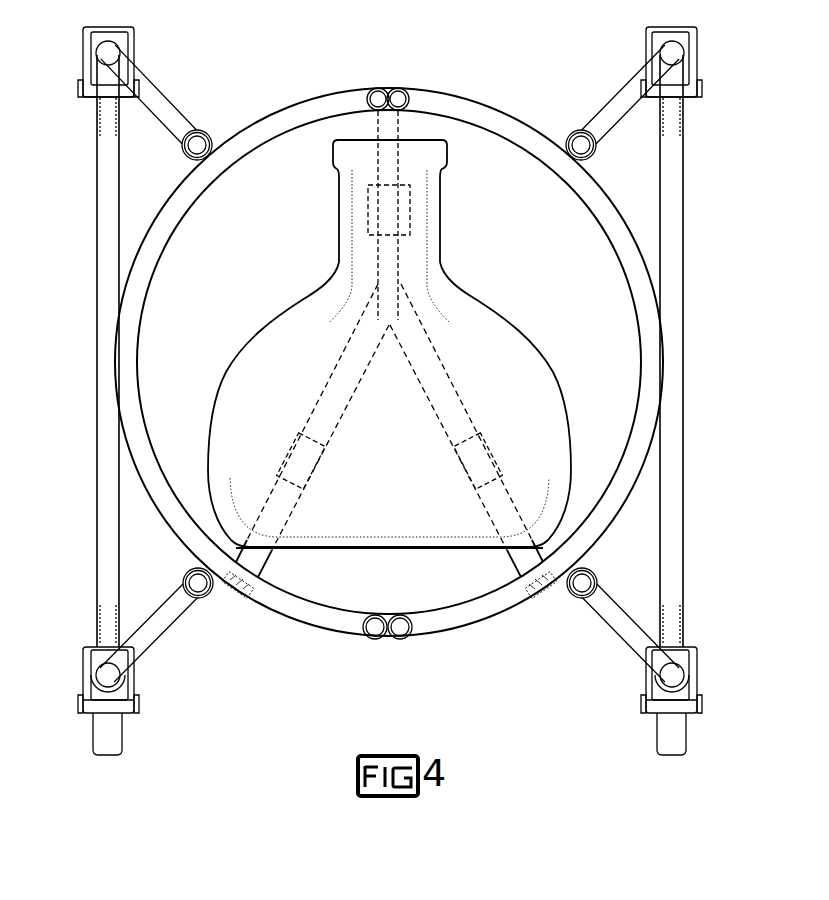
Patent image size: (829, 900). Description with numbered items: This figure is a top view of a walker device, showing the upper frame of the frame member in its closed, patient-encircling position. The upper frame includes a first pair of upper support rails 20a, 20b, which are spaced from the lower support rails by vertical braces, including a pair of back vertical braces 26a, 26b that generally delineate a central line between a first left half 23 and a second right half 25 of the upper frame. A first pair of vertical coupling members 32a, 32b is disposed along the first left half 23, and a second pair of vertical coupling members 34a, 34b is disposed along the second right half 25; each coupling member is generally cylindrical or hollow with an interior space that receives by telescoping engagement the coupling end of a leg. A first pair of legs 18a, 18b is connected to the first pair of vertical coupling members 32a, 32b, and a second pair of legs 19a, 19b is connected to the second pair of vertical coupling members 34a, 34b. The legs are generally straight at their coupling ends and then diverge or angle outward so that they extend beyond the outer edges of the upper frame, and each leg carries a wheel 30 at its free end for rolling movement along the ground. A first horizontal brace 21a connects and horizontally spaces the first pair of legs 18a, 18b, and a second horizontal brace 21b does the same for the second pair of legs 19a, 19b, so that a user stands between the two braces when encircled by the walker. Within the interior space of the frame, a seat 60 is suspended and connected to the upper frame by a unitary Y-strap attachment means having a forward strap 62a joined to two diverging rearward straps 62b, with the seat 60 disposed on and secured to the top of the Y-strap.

The leg 18a is at (155, 97).
The leg 18b is at (160, 630).
The leg 19a is at (603, 98).
The leg 19b is at (616, 630).
The upper support rail 20a is at (117, 334).
The upper support rail 20b is at (661, 334).
The first horizontal brace 21a is at (99, 557).
The second horizontal brace 21b is at (680, 557).
The first left half 23 is at (237, 281).
The second right half 25 is at (545, 281).
The back vertical brace 26a is at (370, 632).
The back vertical brace 26b is at (402, 632).
The wheel 30 is at (82, 74).
The vertical coupling member 32a is at (206, 128).
The vertical coupling member 32b is at (203, 603).
The vertical coupling member 34a is at (573, 128).
The vertical coupling member 34b is at (572, 602).
The seat 60 is at (497, 358).
The forward strap 62a is at (378, 249).
The rearward straps 62b is at (433, 378).